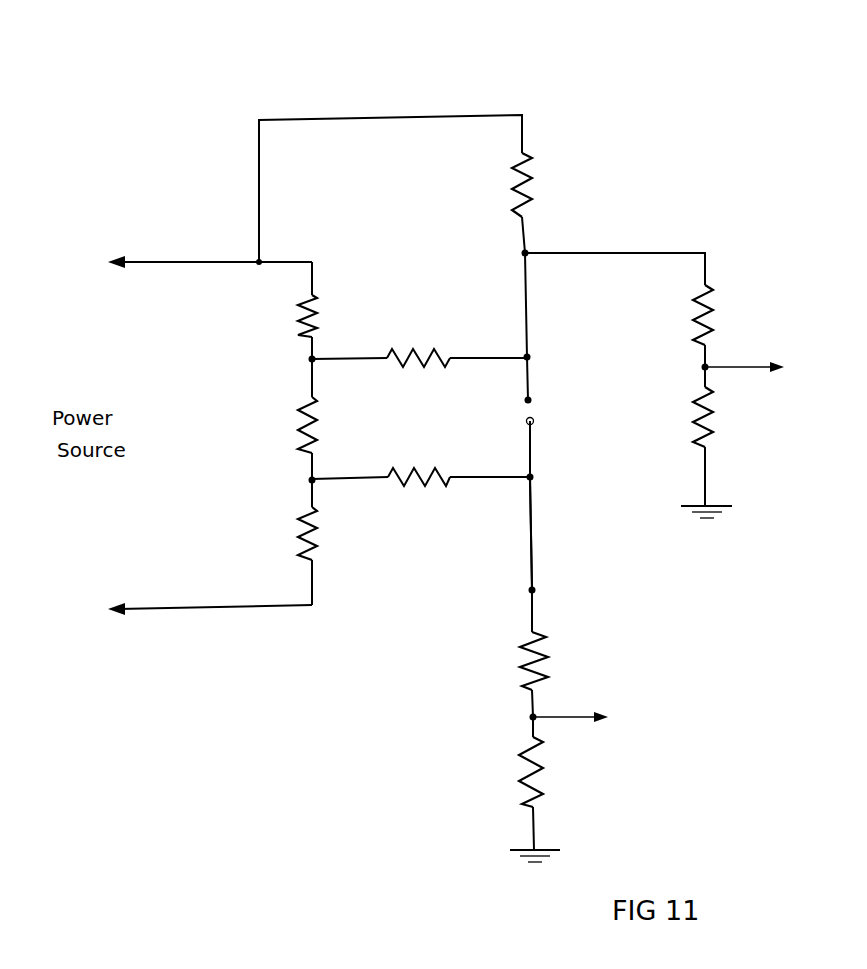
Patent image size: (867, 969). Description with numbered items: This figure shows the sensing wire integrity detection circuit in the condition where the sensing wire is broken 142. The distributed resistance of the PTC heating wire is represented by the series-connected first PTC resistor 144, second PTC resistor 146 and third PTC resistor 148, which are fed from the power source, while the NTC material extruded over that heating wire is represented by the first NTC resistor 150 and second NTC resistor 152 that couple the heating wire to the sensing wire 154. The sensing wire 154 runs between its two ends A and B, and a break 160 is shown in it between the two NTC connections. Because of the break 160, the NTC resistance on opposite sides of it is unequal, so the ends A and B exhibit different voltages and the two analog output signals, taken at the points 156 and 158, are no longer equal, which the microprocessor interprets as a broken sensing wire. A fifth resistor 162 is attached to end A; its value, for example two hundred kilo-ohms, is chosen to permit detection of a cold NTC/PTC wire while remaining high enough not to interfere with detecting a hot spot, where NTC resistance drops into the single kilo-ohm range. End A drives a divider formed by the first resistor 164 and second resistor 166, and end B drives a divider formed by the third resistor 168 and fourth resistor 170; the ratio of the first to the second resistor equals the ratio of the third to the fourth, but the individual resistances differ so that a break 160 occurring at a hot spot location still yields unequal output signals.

The circuit with broken sensing wire 142 is at (706, 110).
The resistor Rptc1 144 is at (259, 318).
The resistor Rptc2 146 is at (259, 426).
The resistor Rptc3 148 is at (261, 533).
The resistor Rntc1 150 is at (418, 326).
The resistor Rntc2 152 is at (420, 445).
The sensing wire 154 is at (545, 556).
The node between R1 and R2 (AD1 output) 156 is at (760, 368).
The node between R3 and R4 (AD2 output) 158 is at (583, 718).
The break 160 is at (553, 408).
The resistor R5 162 is at (574, 185).
The resistor R1 164 is at (757, 315).
The resistor R2 166 is at (769, 418).
The resistor R3 168 is at (591, 661).
The resistor R4 170 is at (598, 772).